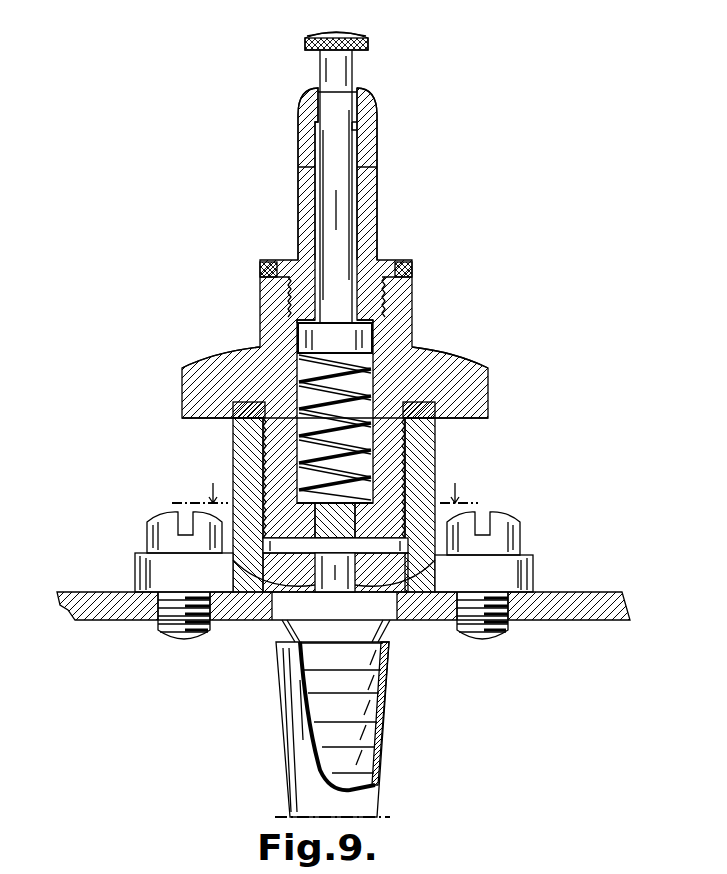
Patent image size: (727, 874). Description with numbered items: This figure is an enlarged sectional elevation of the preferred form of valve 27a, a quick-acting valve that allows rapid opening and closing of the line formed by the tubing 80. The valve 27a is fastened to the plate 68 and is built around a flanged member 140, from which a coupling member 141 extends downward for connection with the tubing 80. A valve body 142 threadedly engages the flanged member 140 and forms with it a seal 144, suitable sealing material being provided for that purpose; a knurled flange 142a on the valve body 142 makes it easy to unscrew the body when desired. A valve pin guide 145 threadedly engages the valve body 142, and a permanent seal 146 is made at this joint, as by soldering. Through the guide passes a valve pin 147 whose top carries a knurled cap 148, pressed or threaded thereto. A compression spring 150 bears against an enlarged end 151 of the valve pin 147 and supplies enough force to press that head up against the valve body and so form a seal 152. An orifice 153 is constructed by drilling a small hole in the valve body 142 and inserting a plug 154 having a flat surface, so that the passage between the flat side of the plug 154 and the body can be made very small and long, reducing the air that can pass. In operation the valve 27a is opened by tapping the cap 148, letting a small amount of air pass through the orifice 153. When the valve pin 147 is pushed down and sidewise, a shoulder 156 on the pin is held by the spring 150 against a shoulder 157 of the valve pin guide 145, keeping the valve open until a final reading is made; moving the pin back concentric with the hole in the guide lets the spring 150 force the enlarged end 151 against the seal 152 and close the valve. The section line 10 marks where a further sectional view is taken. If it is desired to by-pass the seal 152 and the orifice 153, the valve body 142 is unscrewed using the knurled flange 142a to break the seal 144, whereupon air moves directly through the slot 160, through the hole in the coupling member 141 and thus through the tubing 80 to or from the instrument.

The valve 27a is at (238, 236).
The knurled cap 148 is at (368, 45).
The shoulder 156 is at (340, 91).
The shoulder 157 is at (360, 128).
The valve pin 147 is at (335, 156).
The valve pin guide 145 is at (370, 208).
The permanent seal 146 is at (403, 263).
The valve body 142 is at (407, 295).
The seal 152 is at (378, 323).
The enlarged end 151 is at (303, 336).
The knurled flange 142a is at (488, 376).
The seal 144 is at (433, 422).
The compression spring 150 is at (298, 428).
The flanged member 140 is at (240, 465).
The slot 160 is at (400, 462).
The section line 10 is at (326, 493).
The orifice 153 is at (275, 585).
The plug 154 is at (427, 567).
The plate 68 is at (82, 575).
The coupling member 141 is at (385, 686).
The tubing 80 is at (372, 791).